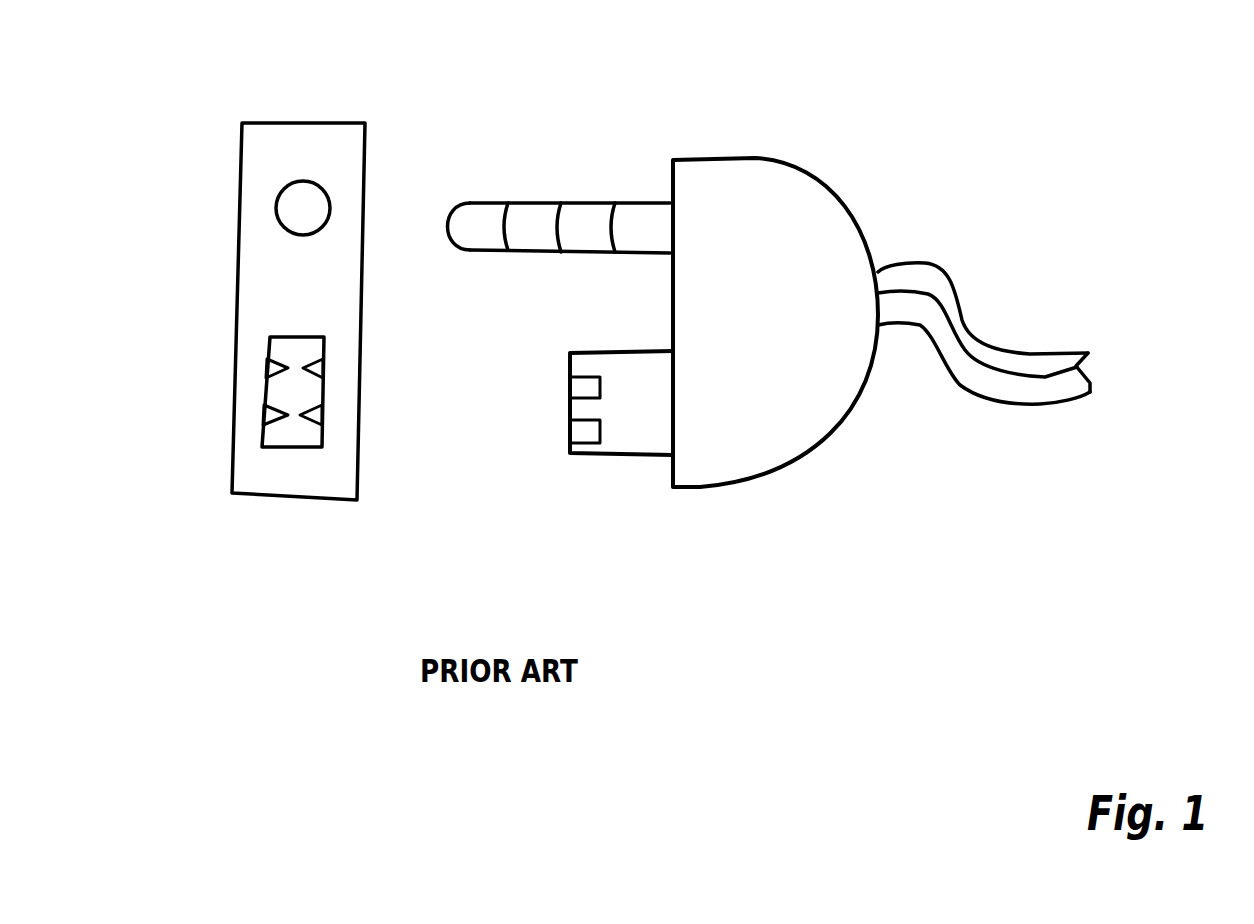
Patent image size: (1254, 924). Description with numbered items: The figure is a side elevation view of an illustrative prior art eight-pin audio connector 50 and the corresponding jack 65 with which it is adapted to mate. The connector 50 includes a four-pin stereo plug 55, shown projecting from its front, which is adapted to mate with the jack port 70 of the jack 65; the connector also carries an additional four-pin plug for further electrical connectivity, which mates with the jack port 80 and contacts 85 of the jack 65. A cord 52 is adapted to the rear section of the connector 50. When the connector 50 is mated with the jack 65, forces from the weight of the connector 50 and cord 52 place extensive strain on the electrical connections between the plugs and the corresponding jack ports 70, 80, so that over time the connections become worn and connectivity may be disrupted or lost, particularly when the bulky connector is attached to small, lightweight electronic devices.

The eight-pin audio connector 50 is at (783, 215).
The cord 52 is at (1005, 358).
The four-pin stereo plug 55 is at (530, 212).
The jack 65 is at (263, 146).
The jack port 70 is at (305, 200).
The jack port 80 is at (283, 430).
The contacts 85 is at (272, 368).